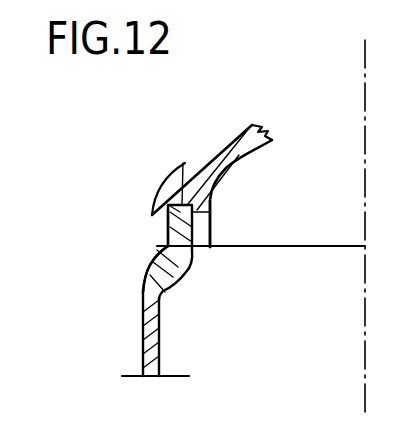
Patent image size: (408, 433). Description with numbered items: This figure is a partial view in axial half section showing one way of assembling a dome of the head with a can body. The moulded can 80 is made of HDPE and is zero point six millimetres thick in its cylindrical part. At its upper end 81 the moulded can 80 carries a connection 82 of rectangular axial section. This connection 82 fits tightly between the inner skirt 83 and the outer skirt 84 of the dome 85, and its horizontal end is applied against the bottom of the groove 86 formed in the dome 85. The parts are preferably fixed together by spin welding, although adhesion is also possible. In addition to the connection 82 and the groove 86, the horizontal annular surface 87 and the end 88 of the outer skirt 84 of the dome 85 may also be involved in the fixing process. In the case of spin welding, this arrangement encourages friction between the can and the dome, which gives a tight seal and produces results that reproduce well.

The moulded can 80 is at (145, 326).
The upper end 81 is at (165, 267).
The connection 82 is at (170, 213).
The inner skirt 83 is at (198, 212).
The outer skirt 84 is at (167, 222).
The dome 85 is at (208, 160).
The groove 86 is at (183, 163).
The horizontal annular surface 87 is at (157, 252).
The end of the outer skirt 88 is at (157, 252).